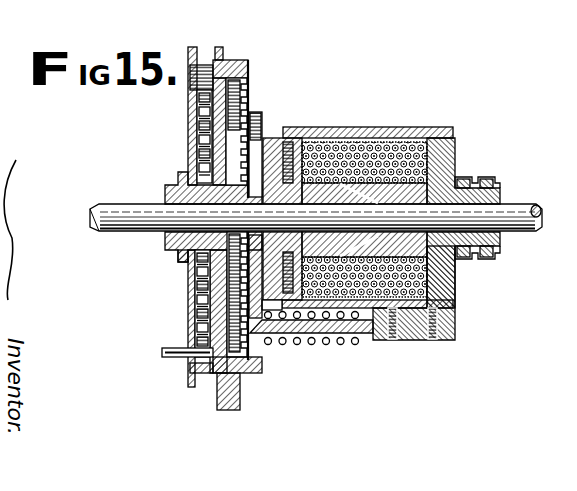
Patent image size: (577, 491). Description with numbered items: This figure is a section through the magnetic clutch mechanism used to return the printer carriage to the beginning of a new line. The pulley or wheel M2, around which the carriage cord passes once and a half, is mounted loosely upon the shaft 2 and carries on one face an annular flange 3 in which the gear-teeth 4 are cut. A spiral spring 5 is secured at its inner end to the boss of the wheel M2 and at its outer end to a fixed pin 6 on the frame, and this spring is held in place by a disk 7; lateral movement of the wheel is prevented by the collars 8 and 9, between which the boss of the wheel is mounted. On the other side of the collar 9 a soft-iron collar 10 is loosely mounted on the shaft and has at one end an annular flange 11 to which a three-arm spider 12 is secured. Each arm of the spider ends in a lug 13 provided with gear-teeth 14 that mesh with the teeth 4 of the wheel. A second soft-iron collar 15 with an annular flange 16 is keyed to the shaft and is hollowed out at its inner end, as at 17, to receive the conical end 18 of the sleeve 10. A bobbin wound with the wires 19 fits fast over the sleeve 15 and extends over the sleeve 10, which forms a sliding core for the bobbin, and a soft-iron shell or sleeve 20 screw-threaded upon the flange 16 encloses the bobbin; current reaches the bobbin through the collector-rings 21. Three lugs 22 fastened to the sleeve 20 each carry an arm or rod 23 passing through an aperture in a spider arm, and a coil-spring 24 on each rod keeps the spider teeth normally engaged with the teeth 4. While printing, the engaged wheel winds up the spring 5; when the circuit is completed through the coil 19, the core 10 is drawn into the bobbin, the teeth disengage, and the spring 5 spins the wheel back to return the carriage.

The shaft 2 is at (133, 203).
The pulley or wheel M2 is at (199, 57).
The annular flange 3 is at (238, 62).
The gear-teeth 4 is at (249, 98).
The spiral spring 5 is at (196, 127).
The fixed pin 6 is at (164, 352).
The disk 7 is at (195, 281).
The collar 8 is at (167, 237).
The collar 9 is at (180, 256).
The soft-iron collar 10 is at (322, 141).
The annular flange 11 is at (271, 138).
The three-arm spider 12 is at (257, 344).
The lug 13 is at (257, 371).
The gear-teeth 14 is at (240, 377).
The soft-iron collar 15 is at (453, 274).
The annular flange 16 is at (457, 158).
The hollowed-out inner end 17 is at (383, 341).
The conical end 18 is at (345, 253).
The bobbin wires (coil) 19 is at (412, 118).
The soft-iron shell or sleeve 20 is at (372, 127).
The collector-rings 21 is at (513, 228).
The lugs 22 is at (454, 328).
The arm or rod 23 is at (197, 378).
The coil-spring 24 is at (200, 325).